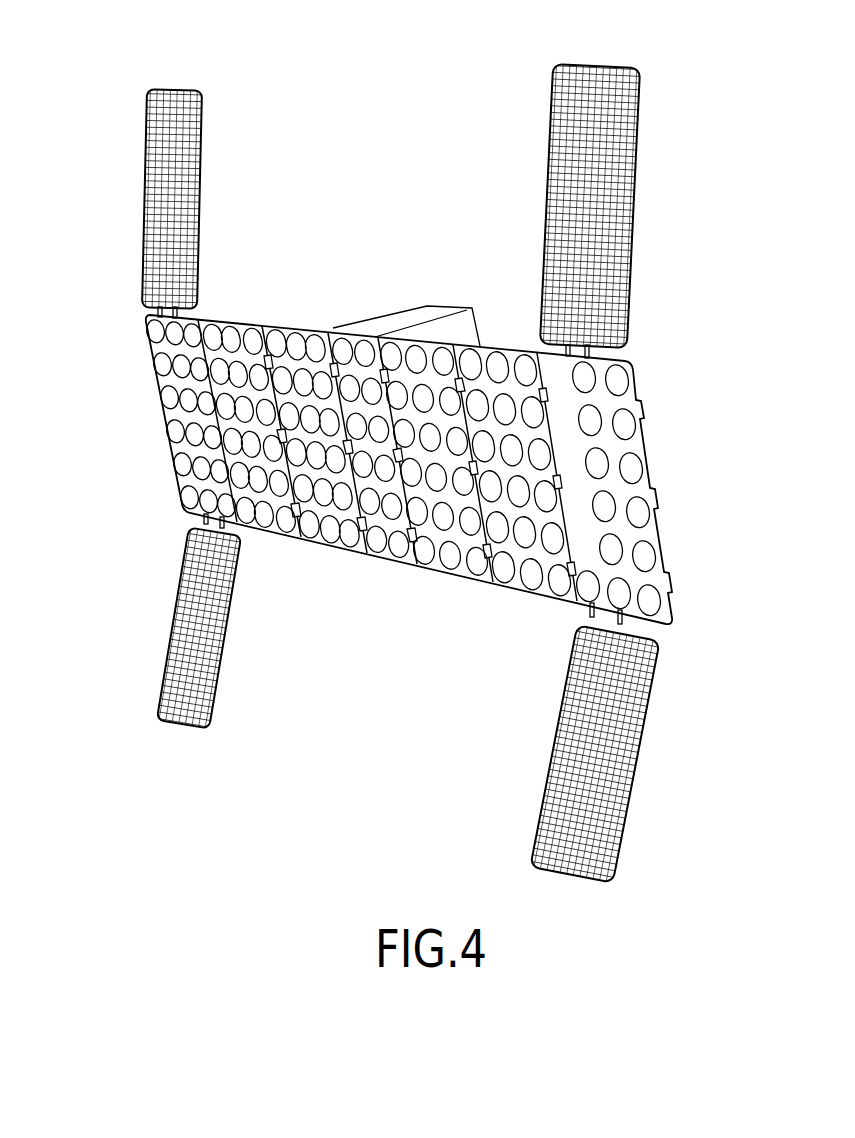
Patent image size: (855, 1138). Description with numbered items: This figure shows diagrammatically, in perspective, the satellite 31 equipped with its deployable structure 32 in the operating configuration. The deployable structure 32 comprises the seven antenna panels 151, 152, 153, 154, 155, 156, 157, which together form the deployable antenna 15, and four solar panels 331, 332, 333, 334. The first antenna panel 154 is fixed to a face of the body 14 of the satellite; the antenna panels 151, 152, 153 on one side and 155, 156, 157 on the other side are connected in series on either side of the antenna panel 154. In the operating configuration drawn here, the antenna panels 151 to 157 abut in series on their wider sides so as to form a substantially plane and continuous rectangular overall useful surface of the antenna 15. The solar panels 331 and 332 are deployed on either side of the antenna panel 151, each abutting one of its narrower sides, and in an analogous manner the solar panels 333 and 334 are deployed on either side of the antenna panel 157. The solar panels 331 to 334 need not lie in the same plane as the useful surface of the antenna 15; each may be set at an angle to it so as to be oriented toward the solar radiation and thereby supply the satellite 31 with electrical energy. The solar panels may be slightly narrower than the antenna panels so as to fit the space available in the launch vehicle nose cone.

The body 14 is at (445, 307).
The deployable antenna 15 is at (684, 414).
The satellite 31 is at (423, 151).
The deployable structure 32 is at (116, 195).
The antenna panel 151 is at (160, 413).
The antenna panel 152 is at (236, 322).
The antenna panel 153 is at (300, 328).
The first antenna panel 154 is at (387, 556).
The antenna panel 155 is at (465, 575).
The antenna panel 156 is at (542, 597).
The antenna panel 157 is at (633, 373).
The solar panel 331 is at (212, 710).
The solar panel 332 is at (199, 138).
The solar panel 333 is at (628, 806).
The solar panel 334 is at (637, 152).